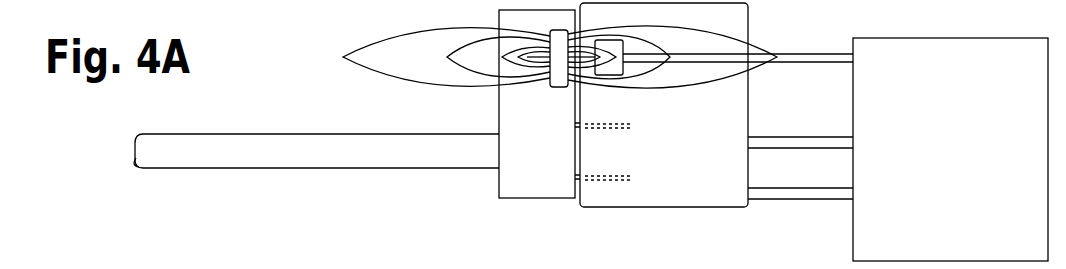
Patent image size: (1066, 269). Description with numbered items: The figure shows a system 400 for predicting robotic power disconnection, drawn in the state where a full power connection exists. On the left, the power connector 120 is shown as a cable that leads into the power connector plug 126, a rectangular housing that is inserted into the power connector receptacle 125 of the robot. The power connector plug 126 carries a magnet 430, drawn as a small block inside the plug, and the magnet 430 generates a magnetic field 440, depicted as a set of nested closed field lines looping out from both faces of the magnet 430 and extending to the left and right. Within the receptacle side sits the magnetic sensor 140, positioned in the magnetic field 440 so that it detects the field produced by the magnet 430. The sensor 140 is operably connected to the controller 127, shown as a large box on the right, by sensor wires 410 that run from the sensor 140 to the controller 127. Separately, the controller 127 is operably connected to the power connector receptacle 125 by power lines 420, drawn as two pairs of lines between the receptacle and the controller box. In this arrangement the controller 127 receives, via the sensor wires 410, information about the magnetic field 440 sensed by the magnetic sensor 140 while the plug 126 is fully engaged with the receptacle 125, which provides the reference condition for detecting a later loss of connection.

The system 400 is at (381, 192).
The power connector 120 is at (199, 163).
The power connector plug 126 is at (512, 178).
The power connector receptacle 125 is at (718, 195).
The magnet 430 is at (558, 78).
The magnetic field 440 is at (345, 58).
The magnetic sensor 140 is at (624, 44).
The sensor wires 410 is at (813, 53).
The power lines 420 is at (833, 193).
The controller 127 is at (954, 190).